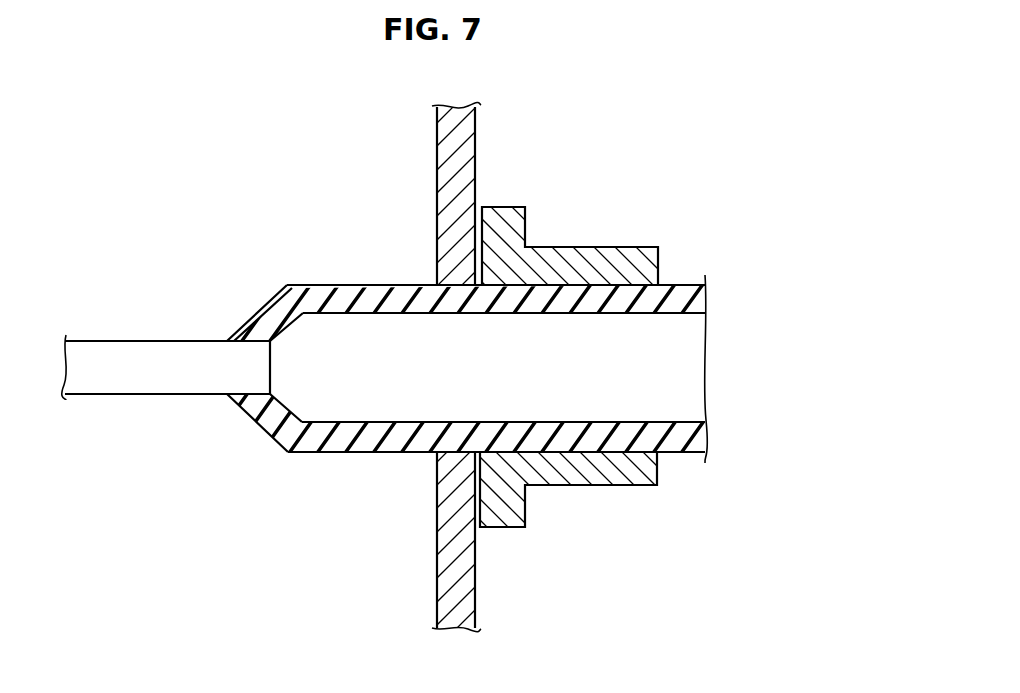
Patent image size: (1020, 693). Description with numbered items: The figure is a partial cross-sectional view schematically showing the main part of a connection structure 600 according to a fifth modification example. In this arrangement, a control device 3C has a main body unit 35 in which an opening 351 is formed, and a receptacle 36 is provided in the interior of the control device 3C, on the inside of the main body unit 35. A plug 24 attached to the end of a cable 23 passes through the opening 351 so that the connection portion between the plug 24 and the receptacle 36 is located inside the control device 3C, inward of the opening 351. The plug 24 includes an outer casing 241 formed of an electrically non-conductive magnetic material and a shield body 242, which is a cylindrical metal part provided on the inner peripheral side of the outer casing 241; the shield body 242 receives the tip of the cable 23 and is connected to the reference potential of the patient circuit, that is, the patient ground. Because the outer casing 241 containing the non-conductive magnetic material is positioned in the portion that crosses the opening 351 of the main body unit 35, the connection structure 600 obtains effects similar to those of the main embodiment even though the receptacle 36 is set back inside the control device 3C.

The connection structure 600 is at (418, 113).
The cable 23 is at (145, 341).
The plug 24 is at (359, 282).
The outer casing 241 is at (248, 408).
The shield body 242 is at (412, 388).
The control device 3C is at (633, 160).
The main body unit 35 is at (475, 175).
The opening 351 is at (450, 451).
The receptacle 36 is at (588, 247).